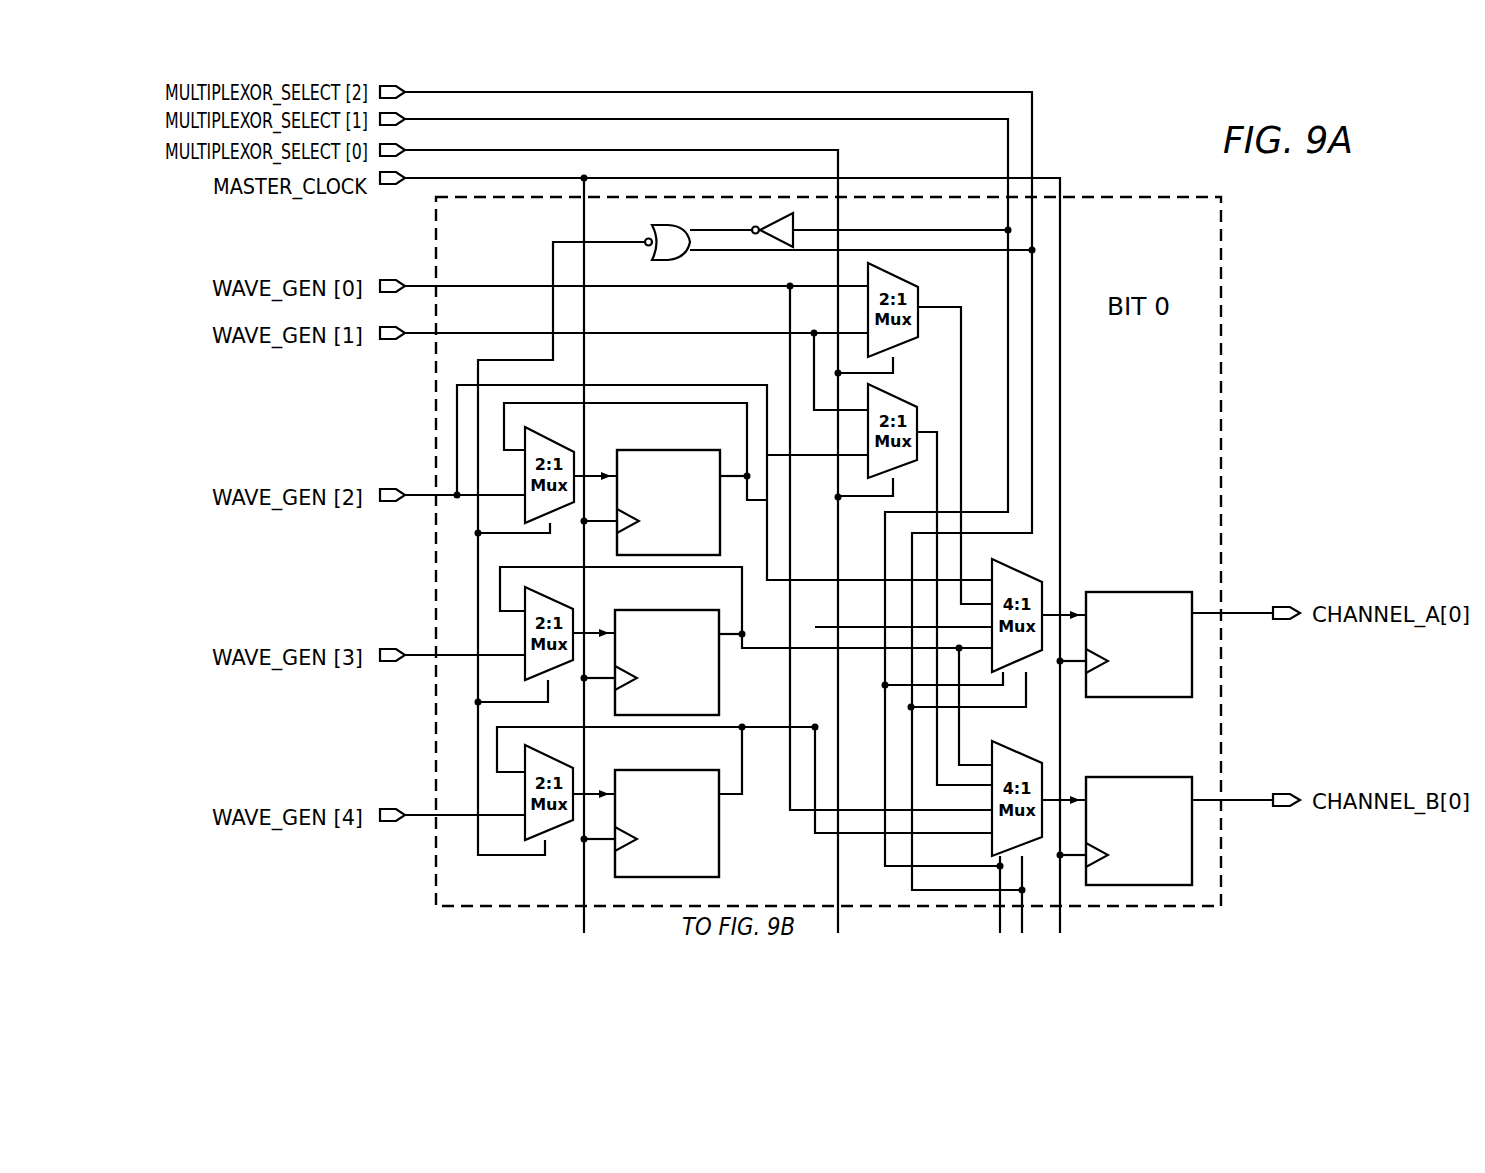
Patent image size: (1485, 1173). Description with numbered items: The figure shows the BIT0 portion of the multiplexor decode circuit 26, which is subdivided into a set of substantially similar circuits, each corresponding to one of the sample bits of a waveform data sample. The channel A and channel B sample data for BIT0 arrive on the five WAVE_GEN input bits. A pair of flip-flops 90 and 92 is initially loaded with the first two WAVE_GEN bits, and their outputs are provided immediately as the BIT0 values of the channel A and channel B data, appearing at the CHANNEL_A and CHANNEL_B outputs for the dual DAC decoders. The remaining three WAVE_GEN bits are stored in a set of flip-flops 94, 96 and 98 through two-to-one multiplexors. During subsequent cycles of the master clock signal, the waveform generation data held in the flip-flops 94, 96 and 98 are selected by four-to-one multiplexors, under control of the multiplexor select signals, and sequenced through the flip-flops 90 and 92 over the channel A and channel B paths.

The multiplexor decode circuit 26 is at (1223, 352).
The flip-flop 90 is at (1139, 644).
The flip-flop 92 is at (1139, 831).
The flip-flop 94 is at (668, 502).
The flip-flop 96 is at (667, 662).
The flip-flop 98 is at (667, 823).